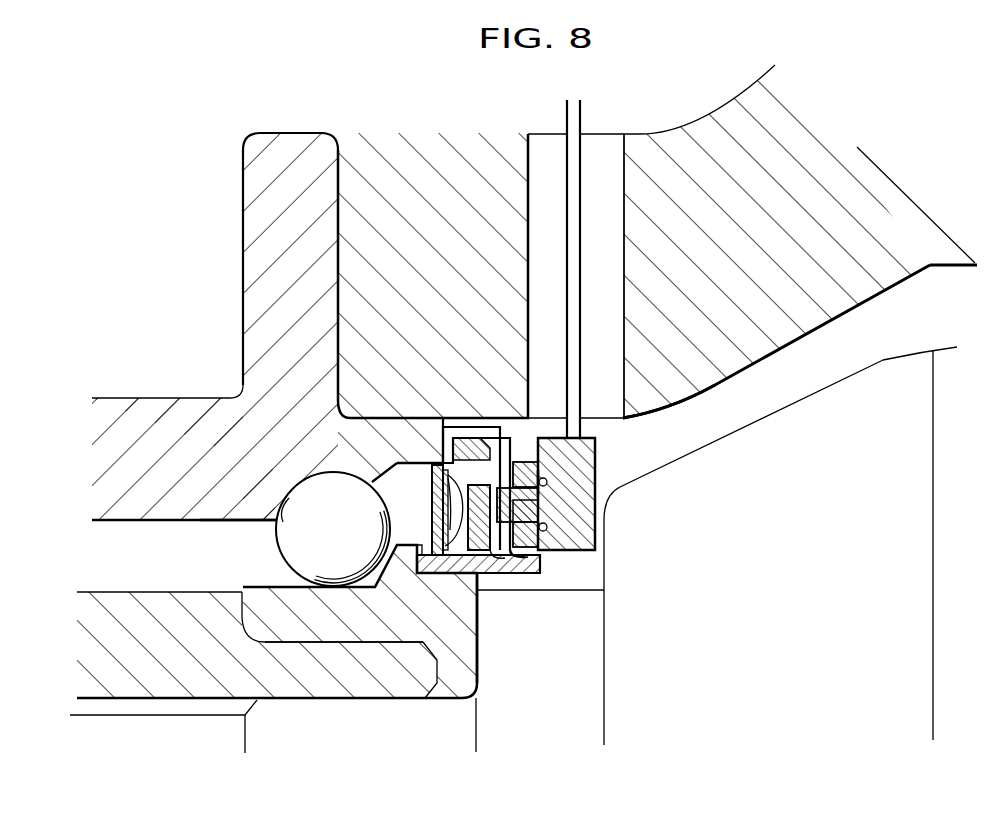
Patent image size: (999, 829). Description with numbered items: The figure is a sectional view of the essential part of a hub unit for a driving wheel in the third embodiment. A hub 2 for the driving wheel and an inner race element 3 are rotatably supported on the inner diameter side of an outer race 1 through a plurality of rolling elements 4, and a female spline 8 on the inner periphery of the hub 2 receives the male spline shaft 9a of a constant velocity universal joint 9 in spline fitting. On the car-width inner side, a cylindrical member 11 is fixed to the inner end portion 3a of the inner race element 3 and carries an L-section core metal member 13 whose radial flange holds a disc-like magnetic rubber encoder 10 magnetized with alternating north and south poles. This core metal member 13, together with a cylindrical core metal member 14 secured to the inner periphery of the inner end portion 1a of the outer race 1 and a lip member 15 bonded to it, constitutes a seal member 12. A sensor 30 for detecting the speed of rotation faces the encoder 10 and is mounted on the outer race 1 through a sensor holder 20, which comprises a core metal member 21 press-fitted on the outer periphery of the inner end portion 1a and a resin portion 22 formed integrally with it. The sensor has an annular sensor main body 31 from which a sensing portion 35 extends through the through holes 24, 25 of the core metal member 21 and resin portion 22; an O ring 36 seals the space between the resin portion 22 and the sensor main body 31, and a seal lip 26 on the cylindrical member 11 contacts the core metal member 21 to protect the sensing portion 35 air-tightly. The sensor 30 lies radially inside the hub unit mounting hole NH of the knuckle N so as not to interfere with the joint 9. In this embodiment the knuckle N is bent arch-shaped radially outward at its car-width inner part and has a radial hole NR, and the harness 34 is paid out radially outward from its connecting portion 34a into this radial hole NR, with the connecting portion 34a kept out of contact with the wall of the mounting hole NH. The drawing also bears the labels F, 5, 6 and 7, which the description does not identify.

The flange F is at (258, 250).
The outer race 1 is at (124, 458).
The inner end portion of the outer race 1a is at (445, 430).
The lip member 15 is at (365, 468).
The knuckle N is at (807, 350).
The connecting portion of the harness 34a is at (663, 406).
The radial hole NR is at (624, 306).
The hub unit mounting hole NH is at (589, 423).
The harness 34 is at (590, 165).
The constant velocity universal joint 9 is at (921, 344).
The female spline 8 is at (125, 718).
The male spline shaft 9a is at (184, 696).
The hub for a driving wheel 2 is at (124, 647).
The inner race element 3 is at (293, 648).
The inner end portion of the inner race element 3a is at (453, 627).
The hub caulked portion 6 is at (365, 637).
The rolling elements 4 is at (293, 538).
The outer raceway 5 is at (277, 522).
The cage 7 is at (297, 570).
The sensor holder 20 is at (483, 437).
The core metal member of the sensor holder 21 is at (468, 427).
The resin portion 22 is at (520, 462).
The cylindrical core metal member 14 is at (455, 445).
The O ring 36 is at (540, 437).
The through hole 25 is at (560, 483).
The through hole 24 is at (507, 513).
The sensor for detecting the speed of rotation 30 is at (621, 530).
The sensor main body 31 is at (577, 513).
The sensing portion 35 is at (590, 537).
The magnetic rubber encoder 10 is at (480, 570).
The seal member 12 is at (426, 502).
The cylindrical member 11 is at (560, 580).
The core metal member 13 is at (448, 573).
The seal lip 26 is at (527, 567).